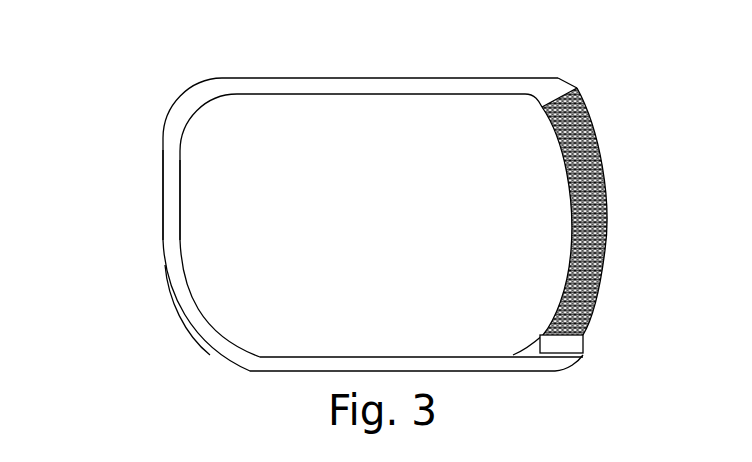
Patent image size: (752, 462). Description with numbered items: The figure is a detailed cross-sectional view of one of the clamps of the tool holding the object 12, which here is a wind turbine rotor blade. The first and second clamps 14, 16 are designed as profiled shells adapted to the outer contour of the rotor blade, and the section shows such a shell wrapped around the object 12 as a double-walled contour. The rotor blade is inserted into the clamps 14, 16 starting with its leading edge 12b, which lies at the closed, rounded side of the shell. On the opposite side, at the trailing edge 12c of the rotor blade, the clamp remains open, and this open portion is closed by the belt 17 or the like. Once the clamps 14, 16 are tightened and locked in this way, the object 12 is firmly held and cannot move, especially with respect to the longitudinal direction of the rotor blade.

The object 12 is at (455, 112).
The leading edge 12b is at (180, 199).
The trailing edge 12c is at (603, 221).
The first clamp 14 is at (120, 310).
The second clamp 16 is at (176, 277).
The belt 17 is at (597, 248).